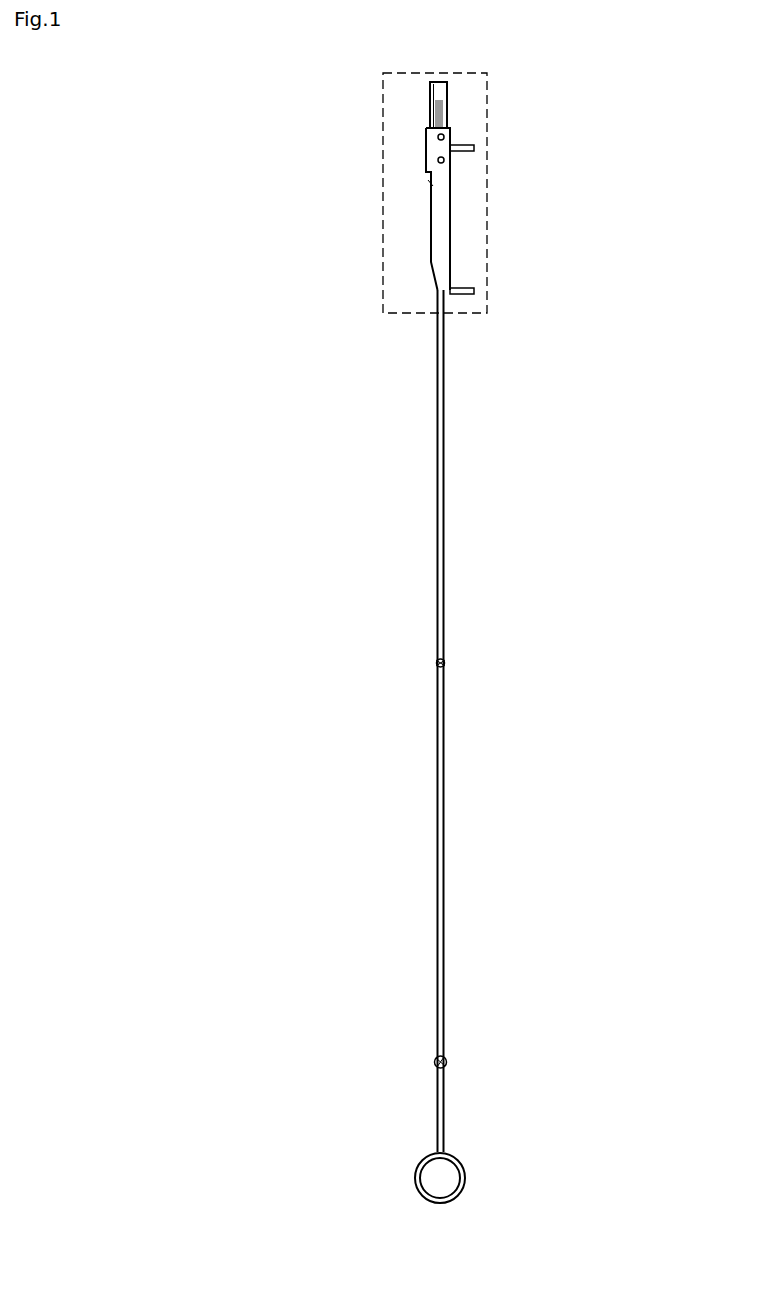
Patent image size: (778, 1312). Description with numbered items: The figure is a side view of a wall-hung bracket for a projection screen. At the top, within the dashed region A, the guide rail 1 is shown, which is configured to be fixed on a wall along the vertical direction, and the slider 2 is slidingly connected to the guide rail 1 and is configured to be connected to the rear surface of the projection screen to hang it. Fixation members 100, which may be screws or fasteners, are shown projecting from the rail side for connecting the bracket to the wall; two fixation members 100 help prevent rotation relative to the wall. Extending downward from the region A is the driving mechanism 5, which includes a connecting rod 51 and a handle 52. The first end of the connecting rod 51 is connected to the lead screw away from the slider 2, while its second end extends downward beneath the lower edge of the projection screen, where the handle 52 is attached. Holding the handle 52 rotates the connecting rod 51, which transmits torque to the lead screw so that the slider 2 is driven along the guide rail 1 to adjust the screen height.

The enlarged detail region A is at (383, 178).
The guide rail 1 is at (440, 205).
The slider 2 is at (448, 90).
The fixation member 100 is at (474, 148).
The driving mechanism 5 is at (516, 746).
The connecting rod 51 is at (444, 455).
The handle 52 is at (475, 1171).